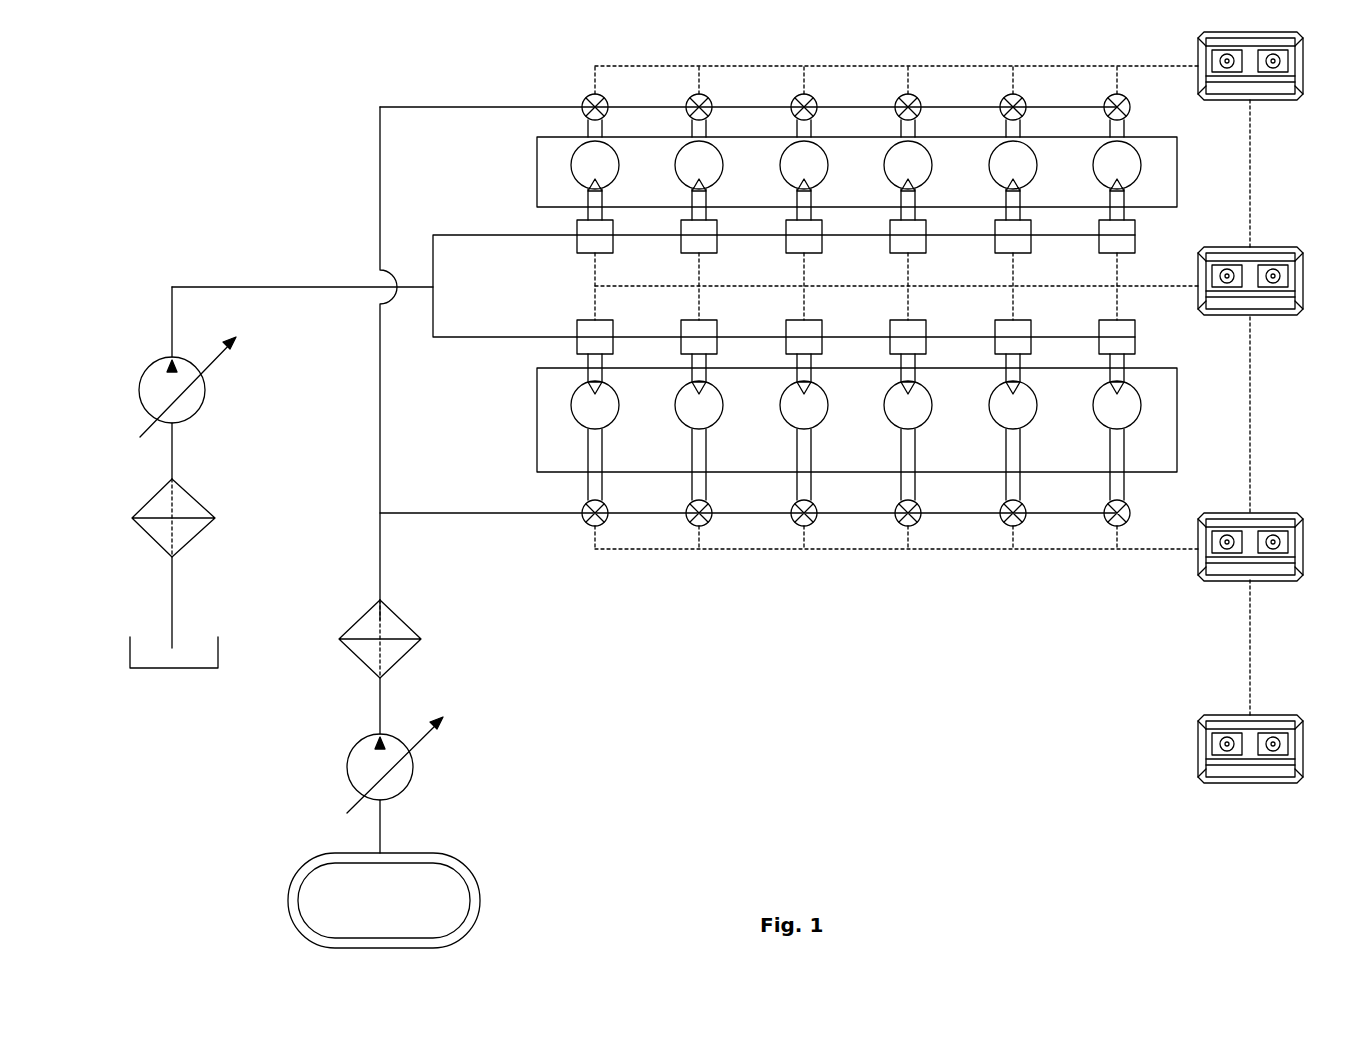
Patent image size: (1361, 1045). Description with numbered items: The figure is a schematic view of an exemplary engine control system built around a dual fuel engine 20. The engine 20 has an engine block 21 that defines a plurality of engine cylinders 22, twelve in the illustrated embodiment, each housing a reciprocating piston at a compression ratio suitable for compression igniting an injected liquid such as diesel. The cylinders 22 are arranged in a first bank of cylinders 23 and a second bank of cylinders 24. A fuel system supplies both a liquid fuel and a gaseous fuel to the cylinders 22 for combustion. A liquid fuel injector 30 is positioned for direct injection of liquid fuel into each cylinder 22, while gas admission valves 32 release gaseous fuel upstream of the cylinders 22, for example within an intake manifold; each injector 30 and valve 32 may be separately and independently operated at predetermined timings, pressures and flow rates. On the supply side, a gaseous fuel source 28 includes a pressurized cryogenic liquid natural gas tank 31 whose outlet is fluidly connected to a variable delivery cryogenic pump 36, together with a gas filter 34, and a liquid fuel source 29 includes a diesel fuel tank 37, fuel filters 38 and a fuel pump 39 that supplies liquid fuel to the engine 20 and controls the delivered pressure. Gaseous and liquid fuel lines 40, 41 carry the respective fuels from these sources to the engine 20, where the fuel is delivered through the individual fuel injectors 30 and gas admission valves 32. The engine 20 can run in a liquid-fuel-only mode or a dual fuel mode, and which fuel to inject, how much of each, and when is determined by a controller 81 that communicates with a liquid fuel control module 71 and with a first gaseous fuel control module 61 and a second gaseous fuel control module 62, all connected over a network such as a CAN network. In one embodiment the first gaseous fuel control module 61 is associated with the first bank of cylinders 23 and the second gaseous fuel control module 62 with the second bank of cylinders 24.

The dual fuel engine 20 is at (860, 576).
The engine block 21 is at (569, 367).
The engine cylinders 22 is at (572, 408).
The first bank of cylinders 23 is at (537, 451).
The second bank of cylinders 24 is at (537, 156).
The gaseous fuel source 28 is at (526, 783).
The liquid fuel source 29 is at (186, 248).
The liquid fuel injector 30 is at (572, 172).
The pressurized cryogenic liquid natural gas tank 31 is at (480, 901).
The gas admission valves 32 is at (582, 102).
The gas filter 34 is at (422, 640).
The variable delivery cryogenic pump 36 is at (413, 768).
The diesel fuel tank 37 is at (218, 656).
The fuel filters 38 is at (215, 518).
The fuel pump 39 is at (206, 391).
The gaseous fuel line 40 is at (379, 188).
The liquid fuel line 41 is at (272, 287).
The first gaseous fuel control module 61 is at (1303, 66).
The second gaseous fuel control module 62 is at (1303, 548).
The liquid fuel control module 71 is at (1303, 284).
The controller 81 is at (1303, 750).